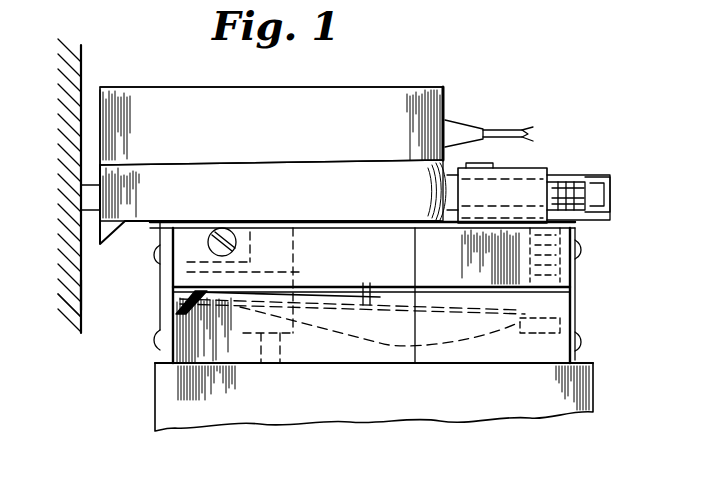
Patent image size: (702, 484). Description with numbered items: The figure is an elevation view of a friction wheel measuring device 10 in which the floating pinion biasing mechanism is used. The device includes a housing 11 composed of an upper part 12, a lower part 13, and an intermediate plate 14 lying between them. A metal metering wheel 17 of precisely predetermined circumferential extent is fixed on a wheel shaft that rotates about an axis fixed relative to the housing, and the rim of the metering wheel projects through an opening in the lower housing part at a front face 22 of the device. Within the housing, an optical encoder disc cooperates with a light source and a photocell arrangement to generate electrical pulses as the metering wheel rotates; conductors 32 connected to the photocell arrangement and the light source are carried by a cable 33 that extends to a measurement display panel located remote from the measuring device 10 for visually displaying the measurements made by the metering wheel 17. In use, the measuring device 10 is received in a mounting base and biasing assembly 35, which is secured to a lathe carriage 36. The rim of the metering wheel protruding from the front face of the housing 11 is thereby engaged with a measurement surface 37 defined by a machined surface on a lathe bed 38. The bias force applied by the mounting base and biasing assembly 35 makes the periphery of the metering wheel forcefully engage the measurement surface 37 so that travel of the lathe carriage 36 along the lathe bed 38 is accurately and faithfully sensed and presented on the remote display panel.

The friction wheel measuring device 10 is at (423, 74).
The housing 11 is at (357, 112).
The upper part 12 is at (283, 100).
The lower part 13 is at (113, 211).
The intermediate plate 14 is at (190, 160).
The metering wheel 17 is at (98, 184).
The front face 22 is at (100, 103).
The conductors 32 is at (527, 131).
The cable 33 is at (494, 129).
The mounting base and biasing assembly 35 is at (516, 262).
The lathe carriage 36 is at (578, 381).
The measurement surface 37 is at (83, 297).
The lathe bed 38 is at (78, 333).